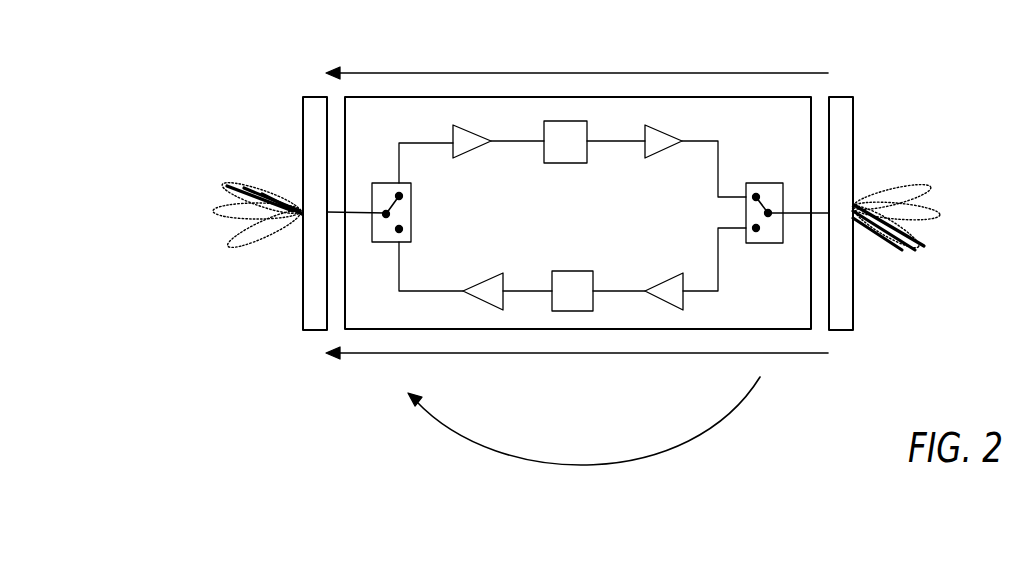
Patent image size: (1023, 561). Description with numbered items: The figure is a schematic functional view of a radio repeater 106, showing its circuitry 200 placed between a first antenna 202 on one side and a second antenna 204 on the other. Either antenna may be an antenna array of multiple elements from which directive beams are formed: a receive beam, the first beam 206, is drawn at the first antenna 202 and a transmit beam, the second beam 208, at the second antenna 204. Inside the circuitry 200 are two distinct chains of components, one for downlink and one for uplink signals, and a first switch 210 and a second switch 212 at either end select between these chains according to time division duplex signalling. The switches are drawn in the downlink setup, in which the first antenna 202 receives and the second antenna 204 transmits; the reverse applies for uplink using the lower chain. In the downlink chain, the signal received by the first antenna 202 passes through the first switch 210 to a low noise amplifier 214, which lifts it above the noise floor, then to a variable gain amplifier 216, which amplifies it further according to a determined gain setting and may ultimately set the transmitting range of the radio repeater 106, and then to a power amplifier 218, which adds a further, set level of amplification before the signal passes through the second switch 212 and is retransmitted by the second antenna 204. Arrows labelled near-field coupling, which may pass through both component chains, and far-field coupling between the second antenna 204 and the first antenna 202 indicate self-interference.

The radio repeater 106 is at (117, 47).
The circuitry 200 is at (777, 329).
The first antenna 202 is at (305, 96).
The second antenna 204 is at (853, 323).
The first beam 206 is at (228, 186).
The second beam 208 is at (922, 246).
The first switch 210 is at (398, 185).
The second switch 212 is at (748, 243).
The low noise amplifier 214 is at (483, 146).
The variable gain amplifier 216 is at (587, 155).
The power amplifier 218 is at (675, 142).